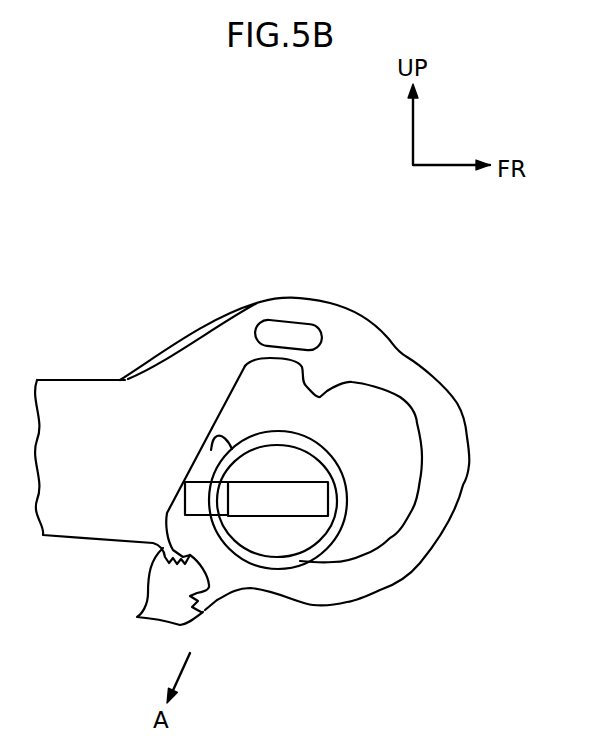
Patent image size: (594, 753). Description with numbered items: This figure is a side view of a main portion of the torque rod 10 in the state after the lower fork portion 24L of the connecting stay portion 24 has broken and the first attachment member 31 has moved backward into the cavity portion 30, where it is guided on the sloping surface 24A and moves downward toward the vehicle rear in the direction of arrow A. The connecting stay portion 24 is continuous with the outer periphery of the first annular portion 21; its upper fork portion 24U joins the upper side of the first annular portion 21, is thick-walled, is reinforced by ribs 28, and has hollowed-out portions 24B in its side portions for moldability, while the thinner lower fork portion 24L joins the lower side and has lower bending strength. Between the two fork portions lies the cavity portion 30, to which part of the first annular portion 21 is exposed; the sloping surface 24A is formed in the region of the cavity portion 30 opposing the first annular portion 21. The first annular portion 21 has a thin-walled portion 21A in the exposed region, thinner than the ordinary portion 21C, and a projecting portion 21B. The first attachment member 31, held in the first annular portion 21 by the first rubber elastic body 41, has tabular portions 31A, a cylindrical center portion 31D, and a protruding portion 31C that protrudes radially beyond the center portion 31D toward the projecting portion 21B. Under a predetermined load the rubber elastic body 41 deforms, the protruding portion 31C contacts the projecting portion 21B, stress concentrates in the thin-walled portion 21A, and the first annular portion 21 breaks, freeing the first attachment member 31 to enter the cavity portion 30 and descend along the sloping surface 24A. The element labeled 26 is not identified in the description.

The torque rod 10 is at (152, 262).
The first annular portion 21 is at (433, 368).
The thin-walled portion 21A is at (200, 450).
The projecting portion 21B is at (175, 492).
The ordinary portion 21C is at (465, 415).
The connecting stay portion 24 is at (88, 543).
The sloping surface 24A is at (213, 426).
The hollowed-out portions 24B is at (300, 333).
The upper fork portion 24U is at (230, 323).
The lower fork portion 24L is at (153, 599).
The arm plate portion 26 is at (95, 354).
The ribs 28 is at (198, 328).
The cavity portion 30 is at (245, 366).
The first attachment member 31 is at (297, 558).
The tabular portion 31A is at (282, 482).
The protruding portion 31C is at (185, 481).
The center portion 31D is at (314, 518).
The first rubber elastic body 41 is at (268, 565).